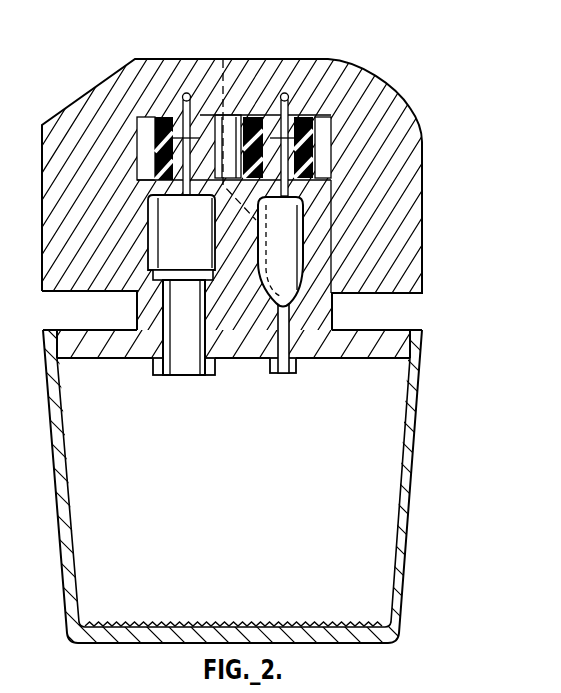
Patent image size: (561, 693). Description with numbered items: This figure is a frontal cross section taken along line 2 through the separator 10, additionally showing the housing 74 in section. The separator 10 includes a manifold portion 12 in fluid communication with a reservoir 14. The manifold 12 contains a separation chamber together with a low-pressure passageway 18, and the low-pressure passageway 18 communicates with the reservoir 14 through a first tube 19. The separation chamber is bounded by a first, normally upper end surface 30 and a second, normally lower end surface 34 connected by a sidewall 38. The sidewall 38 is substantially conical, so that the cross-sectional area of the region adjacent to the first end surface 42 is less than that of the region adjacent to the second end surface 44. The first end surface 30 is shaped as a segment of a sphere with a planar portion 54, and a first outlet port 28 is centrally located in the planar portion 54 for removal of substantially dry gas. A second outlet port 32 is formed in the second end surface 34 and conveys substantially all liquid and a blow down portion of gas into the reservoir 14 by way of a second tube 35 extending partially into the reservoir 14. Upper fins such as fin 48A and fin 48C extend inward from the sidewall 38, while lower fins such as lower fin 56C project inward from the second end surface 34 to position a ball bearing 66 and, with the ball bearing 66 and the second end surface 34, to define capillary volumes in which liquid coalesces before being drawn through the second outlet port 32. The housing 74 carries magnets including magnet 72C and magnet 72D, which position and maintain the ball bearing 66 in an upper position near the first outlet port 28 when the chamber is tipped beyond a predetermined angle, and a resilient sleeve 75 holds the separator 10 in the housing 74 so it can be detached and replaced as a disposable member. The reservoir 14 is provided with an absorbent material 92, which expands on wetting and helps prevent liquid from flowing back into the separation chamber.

The section line 2 is at (0, 344).
The separator 10 is at (408, 318).
The manifold portion 12 is at (320, 60).
The reservoir 14 is at (390, 480).
The low-pressure passageway 18 is at (282, 92).
The first tube 19 is at (153, 362).
The first outlet port 28 is at (400, 124).
The first end surface 30 is at (316, 200).
The second outlet port 32 is at (333, 308).
The second end surface 34 is at (300, 296).
The second tube 35 is at (296, 366).
The sidewall 38 is at (300, 224).
The region adjacent to the first end surface 42 is at (300, 212).
The region adjacent to the second end surface 44 is at (300, 270).
The upper fin 48A is at (222, 278).
The upper fin 48C is at (162, 278).
The planar portion 54 is at (318, 190).
The lower fin 56C is at (205, 299).
The ball bearing 66 is at (223, 52).
The magnet 72C is at (240, 75).
The magnet 72D is at (348, 92).
The housing 74 is at (353, 93).
The resilient sleeve 75 is at (160, 118).
The absorbent material 92 is at (350, 620).